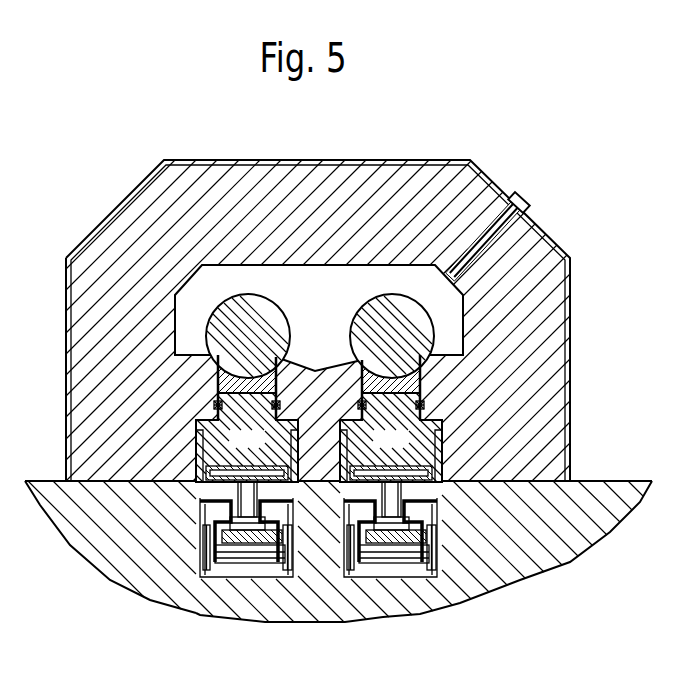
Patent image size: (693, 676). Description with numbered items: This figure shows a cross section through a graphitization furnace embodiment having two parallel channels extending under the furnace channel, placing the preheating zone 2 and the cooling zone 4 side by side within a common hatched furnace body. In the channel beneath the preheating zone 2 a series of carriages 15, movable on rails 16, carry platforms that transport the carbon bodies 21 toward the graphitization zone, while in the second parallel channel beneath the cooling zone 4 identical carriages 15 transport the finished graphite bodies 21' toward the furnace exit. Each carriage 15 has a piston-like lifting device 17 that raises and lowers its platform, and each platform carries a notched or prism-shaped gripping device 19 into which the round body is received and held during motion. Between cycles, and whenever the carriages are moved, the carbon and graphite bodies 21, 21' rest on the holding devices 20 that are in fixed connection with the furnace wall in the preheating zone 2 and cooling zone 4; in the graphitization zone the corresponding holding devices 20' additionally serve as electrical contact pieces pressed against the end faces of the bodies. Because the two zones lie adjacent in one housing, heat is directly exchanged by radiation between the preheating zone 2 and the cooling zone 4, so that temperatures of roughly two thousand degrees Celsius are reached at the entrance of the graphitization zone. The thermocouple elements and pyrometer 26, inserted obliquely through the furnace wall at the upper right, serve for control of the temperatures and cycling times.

The preheating zone 2 is at (195, 303).
The cooling zone 4 is at (453, 305).
The carriages 15 is at (440, 563).
The rails 16 is at (348, 580).
The piston-like lifting devices 17 is at (395, 528).
The gripping devices 19 is at (284, 382).
The holding devices 20 is at (428, 387).
The holding devices 20' is at (209, 387).
The carbon bodies 21 is at (254, 327).
The graphite bodies 21' is at (378, 327).
The thermocouple elements and pyrometer 26 is at (520, 228).